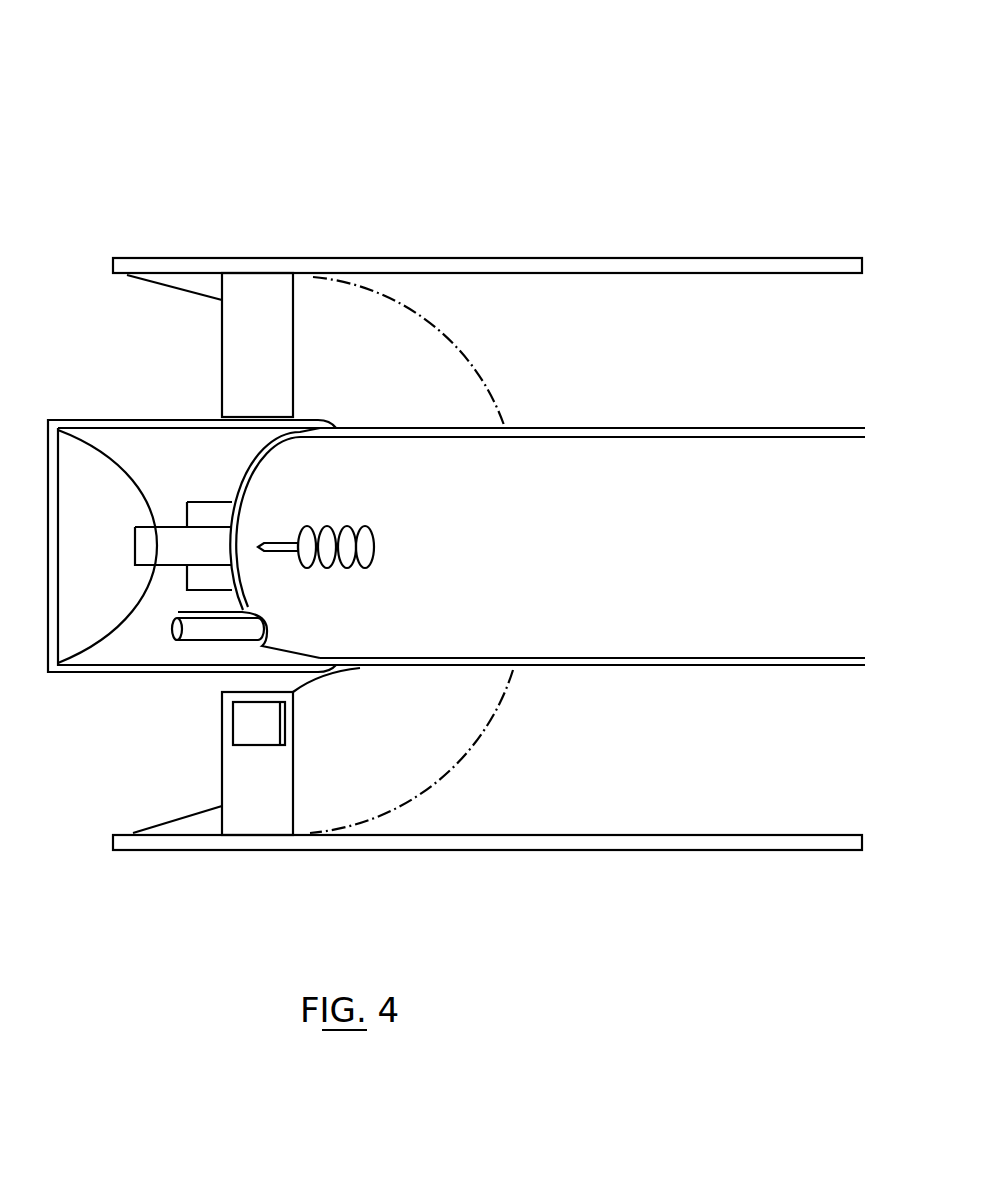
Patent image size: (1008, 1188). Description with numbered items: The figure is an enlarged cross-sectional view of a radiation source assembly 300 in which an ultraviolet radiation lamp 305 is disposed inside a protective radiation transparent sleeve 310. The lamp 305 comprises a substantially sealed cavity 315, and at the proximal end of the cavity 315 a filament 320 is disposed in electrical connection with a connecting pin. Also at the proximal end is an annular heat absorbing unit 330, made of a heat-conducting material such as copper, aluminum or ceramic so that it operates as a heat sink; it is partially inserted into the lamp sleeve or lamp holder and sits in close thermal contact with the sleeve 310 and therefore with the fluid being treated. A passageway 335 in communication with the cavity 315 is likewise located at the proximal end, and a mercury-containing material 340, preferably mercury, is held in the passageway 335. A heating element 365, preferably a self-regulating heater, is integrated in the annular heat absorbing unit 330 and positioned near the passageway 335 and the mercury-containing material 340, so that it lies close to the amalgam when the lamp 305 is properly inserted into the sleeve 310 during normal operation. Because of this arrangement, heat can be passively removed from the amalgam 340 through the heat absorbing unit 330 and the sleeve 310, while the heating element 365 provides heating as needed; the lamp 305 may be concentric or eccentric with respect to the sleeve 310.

The radiation source assembly 300 is at (535, 122).
The ultraviolet radiation lamp 305 is at (690, 435).
The protective radiation transparent sleeve 310 is at (778, 260).
The sealed cavity 315 is at (748, 567).
The filament 320 is at (357, 567).
The annular heat absorbing unit 330 is at (350, 328).
The passageway 335 is at (203, 645).
The mercury-containing material 340 is at (175, 641).
The heating element 365 is at (248, 733).